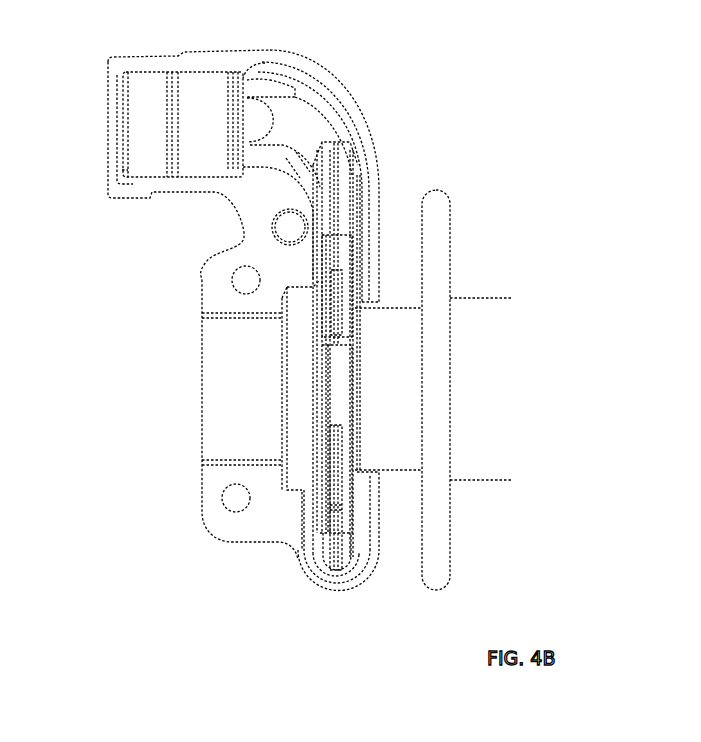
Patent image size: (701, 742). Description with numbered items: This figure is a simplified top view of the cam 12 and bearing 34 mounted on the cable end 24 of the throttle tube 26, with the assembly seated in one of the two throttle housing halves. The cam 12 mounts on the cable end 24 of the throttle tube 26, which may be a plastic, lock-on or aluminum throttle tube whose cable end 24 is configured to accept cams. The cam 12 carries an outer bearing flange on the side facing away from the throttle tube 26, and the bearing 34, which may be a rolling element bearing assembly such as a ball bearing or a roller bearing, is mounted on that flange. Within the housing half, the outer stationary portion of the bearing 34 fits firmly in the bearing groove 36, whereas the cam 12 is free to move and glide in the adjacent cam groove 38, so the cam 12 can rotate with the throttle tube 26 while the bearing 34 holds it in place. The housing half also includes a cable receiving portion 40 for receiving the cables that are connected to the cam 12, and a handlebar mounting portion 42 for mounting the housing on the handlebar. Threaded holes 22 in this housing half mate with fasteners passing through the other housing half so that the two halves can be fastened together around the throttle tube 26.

The cam 12 is at (339, 364).
The threaded holes 22 is at (242, 280).
The cable end 24 is at (358, 448).
The throttle tube 26 is at (485, 330).
The bearing 34 is at (299, 437).
The bearing groove 36 is at (282, 377).
The cam groove 38 is at (324, 550).
The cable receiving portion 40 is at (187, 123).
The handlebar mounting portion 42 is at (218, 404).